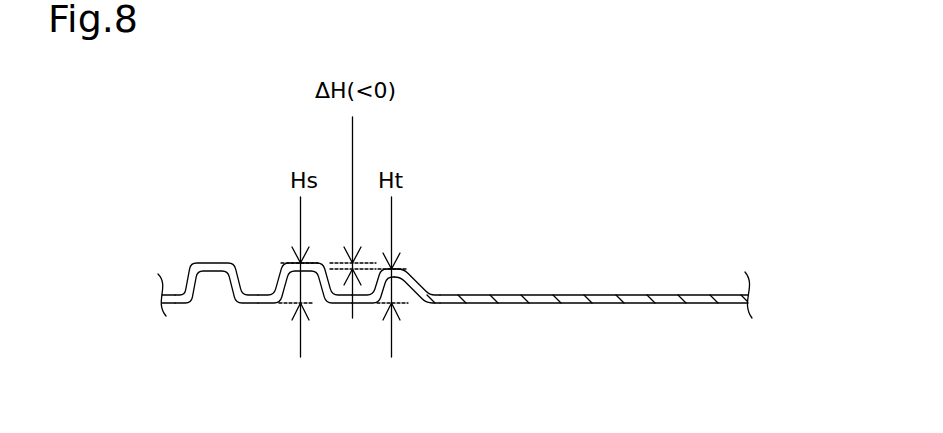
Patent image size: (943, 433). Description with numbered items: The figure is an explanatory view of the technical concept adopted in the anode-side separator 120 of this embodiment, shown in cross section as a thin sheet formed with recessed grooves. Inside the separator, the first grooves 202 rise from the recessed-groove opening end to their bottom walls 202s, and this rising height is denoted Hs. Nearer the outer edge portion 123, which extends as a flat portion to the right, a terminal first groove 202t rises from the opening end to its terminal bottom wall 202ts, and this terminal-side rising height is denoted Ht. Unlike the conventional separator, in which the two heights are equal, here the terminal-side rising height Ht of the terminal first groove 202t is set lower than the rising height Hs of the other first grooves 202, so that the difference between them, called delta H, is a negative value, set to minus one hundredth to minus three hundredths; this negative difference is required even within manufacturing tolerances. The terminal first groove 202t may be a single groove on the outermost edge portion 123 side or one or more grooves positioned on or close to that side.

The anode-side separator 120 is at (402, 278).
The first groove 202 is at (202, 273).
The bottom wall 202s is at (293, 262).
The terminal first groove 202t is at (441, 302).
The terminal bottom wall 202ts is at (404, 270).
The outer edge portion 123 is at (655, 294).